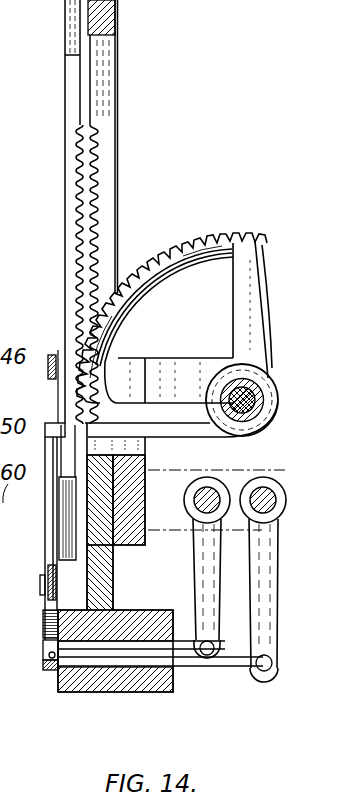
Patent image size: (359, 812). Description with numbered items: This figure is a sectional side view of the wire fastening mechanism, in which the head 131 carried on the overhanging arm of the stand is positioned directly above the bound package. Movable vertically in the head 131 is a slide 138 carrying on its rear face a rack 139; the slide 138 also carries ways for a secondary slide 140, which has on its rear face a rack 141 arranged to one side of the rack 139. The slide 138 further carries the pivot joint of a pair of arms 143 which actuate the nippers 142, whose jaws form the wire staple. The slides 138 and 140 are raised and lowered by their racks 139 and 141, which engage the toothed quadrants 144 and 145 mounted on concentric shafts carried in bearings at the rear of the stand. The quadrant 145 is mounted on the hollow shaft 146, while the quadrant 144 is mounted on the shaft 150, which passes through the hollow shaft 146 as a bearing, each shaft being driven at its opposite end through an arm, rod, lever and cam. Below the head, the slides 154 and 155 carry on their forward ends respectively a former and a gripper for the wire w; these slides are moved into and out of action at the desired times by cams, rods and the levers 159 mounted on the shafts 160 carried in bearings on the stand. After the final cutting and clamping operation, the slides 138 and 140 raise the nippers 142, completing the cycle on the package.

The head 131 is at (112, 586).
The slide 138 is at (117, 98).
The rack 139 is at (90, 274).
The secondary slide 140 is at (66, 210).
The rack 141 is at (78, 244).
The nippers 142 is at (45, 540).
The arms 143 is at (60, 400).
The toothed quadrant 144 is at (190, 299).
The toothed quadrant 145 is at (205, 236).
The hollow shaft 146 is at (270, 392).
The shaft 150 is at (258, 396).
The slide 154 is at (68, 661).
The slide 155 is at (92, 645).
The levers 159 is at (266, 592).
The shafts 160 is at (263, 492).
The wire w is at (49, 656).